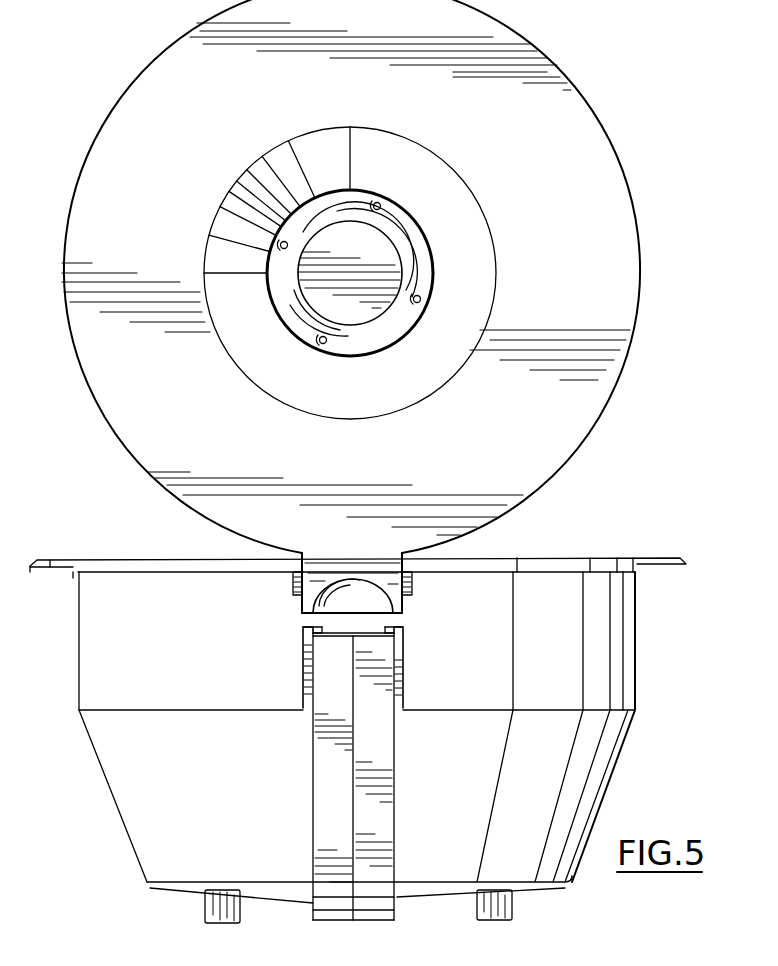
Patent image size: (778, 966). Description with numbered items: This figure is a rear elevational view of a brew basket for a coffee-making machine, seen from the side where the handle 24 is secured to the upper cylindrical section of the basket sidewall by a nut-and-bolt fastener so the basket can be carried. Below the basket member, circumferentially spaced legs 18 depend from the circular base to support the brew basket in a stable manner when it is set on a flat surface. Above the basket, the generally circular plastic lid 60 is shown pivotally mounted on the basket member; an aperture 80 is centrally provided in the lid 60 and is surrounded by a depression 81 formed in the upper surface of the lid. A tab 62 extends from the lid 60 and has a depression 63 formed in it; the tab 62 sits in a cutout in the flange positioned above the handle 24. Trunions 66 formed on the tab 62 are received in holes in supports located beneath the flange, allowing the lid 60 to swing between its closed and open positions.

The lid 60 is at (652, 140).
The depression 81 is at (435, 182).
The aperture 80 is at (432, 272).
The trunions 66 is at (291, 576).
The depression 63 is at (320, 618).
The tab 62 is at (396, 598).
The handle 24 is at (383, 855).
The legs 18 is at (478, 907).